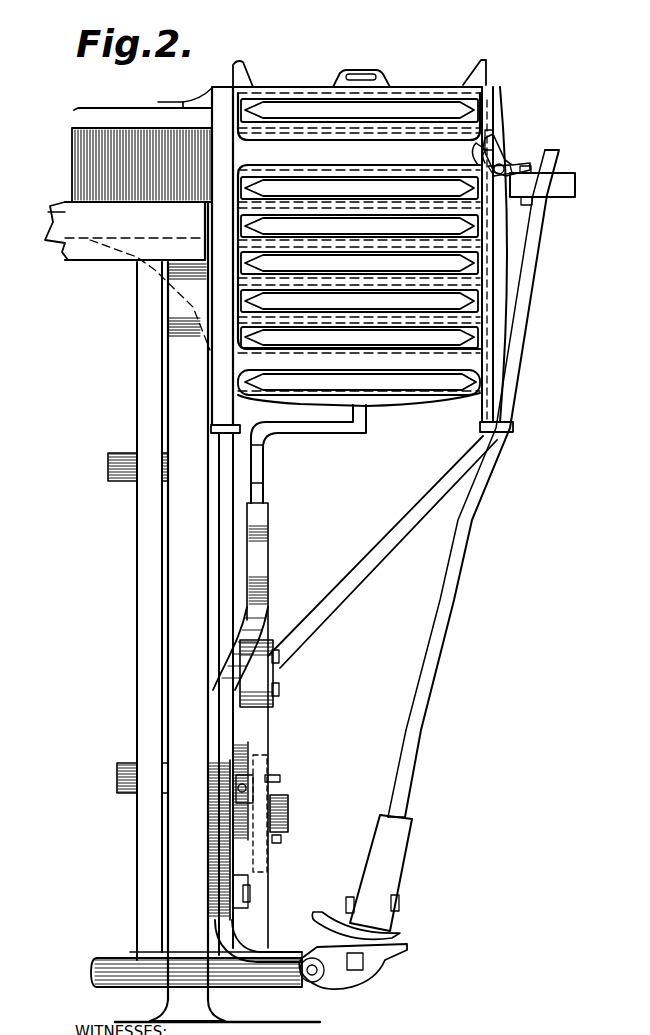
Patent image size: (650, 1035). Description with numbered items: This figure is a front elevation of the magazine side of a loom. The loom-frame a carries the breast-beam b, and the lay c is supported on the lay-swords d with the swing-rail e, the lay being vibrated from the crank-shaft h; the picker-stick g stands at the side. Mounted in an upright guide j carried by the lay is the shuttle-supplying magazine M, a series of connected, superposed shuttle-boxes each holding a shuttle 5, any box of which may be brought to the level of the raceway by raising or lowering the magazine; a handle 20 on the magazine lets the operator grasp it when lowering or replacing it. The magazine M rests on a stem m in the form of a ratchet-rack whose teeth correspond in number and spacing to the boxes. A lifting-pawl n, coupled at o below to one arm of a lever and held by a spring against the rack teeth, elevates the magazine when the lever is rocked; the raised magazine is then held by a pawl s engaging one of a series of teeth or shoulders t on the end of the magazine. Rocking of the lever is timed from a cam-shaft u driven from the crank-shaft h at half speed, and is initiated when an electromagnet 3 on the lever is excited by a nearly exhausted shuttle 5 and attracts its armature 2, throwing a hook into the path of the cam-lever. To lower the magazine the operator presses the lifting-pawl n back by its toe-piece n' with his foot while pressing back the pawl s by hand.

The shuttle-supplying magazine M is at (359, 217).
The shuttle 5 is at (359, 247).
The handle 20 is at (372, 74).
The upright guide j is at (508, 95).
The teeth or shoulders t is at (496, 150).
The pawl s is at (503, 165).
The picker-stick g is at (452, 612).
The breast-beam b is at (138, 229).
The lay c is at (55, 212).
The lay-swords d is at (142, 598).
The loom-frame a is at (217, 612).
The crank-shaft h is at (124, 455).
The cam-shaft u is at (132, 765).
The swing-rail e is at (113, 958).
The stem m is at (297, 425).
The lifting-pawl n is at (355, 692).
The toe-piece n' is at (258, 852).
The coupling point o is at (226, 889).
The armature 2 is at (278, 781).
The electromagnet 3 is at (286, 813).